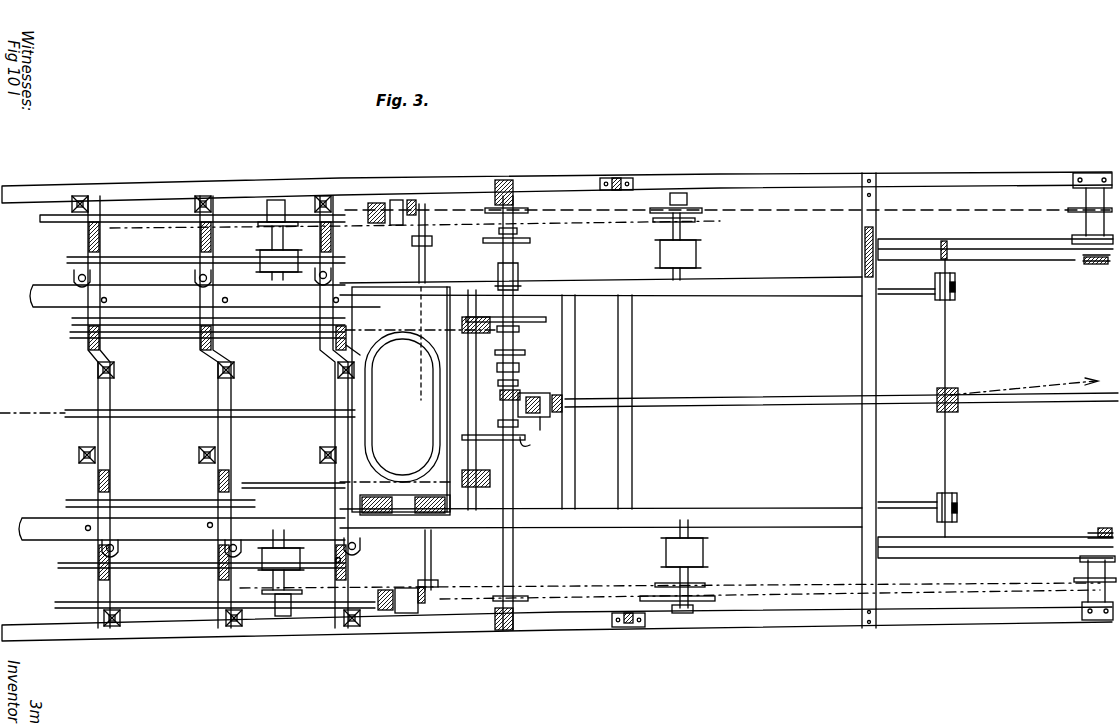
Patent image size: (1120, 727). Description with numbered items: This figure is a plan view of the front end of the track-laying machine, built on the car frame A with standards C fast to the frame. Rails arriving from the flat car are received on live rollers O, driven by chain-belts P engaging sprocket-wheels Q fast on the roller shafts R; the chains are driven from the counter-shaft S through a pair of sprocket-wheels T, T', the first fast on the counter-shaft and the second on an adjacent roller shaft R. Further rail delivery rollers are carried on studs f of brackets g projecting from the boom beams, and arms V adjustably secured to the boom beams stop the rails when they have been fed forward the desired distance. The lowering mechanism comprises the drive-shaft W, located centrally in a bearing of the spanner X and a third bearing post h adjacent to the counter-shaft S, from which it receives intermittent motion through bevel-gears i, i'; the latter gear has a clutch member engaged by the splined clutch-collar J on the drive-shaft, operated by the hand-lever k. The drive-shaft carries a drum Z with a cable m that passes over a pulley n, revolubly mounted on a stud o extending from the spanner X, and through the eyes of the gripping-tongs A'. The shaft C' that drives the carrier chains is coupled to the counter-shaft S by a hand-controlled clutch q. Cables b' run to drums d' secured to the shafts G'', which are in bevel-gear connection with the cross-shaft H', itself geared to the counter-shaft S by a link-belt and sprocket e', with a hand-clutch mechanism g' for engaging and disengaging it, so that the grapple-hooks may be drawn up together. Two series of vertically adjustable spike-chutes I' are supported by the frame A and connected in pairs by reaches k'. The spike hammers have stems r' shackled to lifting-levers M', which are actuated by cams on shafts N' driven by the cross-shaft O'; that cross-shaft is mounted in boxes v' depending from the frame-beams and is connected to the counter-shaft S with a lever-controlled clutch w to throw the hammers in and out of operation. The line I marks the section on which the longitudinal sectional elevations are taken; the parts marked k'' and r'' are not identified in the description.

The car frame A is at (557, 401).
The gripping-tongs A' is at (995, 401).
The standards C is at (622, 391).
The sprocket shaft C' is at (418, 401).
The drum shafts G'' is at (192, 204).
The cross-shaft H' is at (440, 397).
The section line I is at (556, 392).
The spike-chutes I' is at (226, 413).
The splined clutch-collar J is at (542, 430).
The lifting-levers M' is at (218, 412).
The cam shafts N' is at (215, 463).
The rollers O is at (482, 400).
The cross-shaft O' is at (493, 448).
The chain-belts P is at (360, 240).
The sprocket-wheels Q is at (284, 222).
The roller shafts R is at (272, 240).
The counter-shaft S is at (515, 556).
The sprocket-wheel T is at (501, 385).
The sprocket-wheel T' is at (690, 384).
The stop arms V is at (1098, 265).
The drive-shaft W is at (714, 407).
The spanner X is at (862, 354).
The drum Z is at (958, 406).
The cables b' is at (395, 406).
The drums d' is at (382, 413).
The sprocket e' is at (415, 236).
The studs f is at (530, 240).
The bracket g is at (1079, 411).
The hand-clutch mechanism g' is at (518, 275).
The bearing post h is at (340, 350).
The bevel-gear i is at (512, 381).
The bevel-gear i' is at (534, 391).
The hand-lever k is at (575, 389).
The reaches k' is at (217, 340).
The screw nut k'' is at (219, 401).
The cable m is at (947, 341).
The pulley n is at (957, 279).
The stud o is at (900, 292).
The hand controlled clutch q is at (497, 367).
The hammer stems r' is at (223, 538).
The clevis r'' is at (207, 287).
The boxes v' is at (481, 396).
The lever controlled clutch w is at (516, 428).